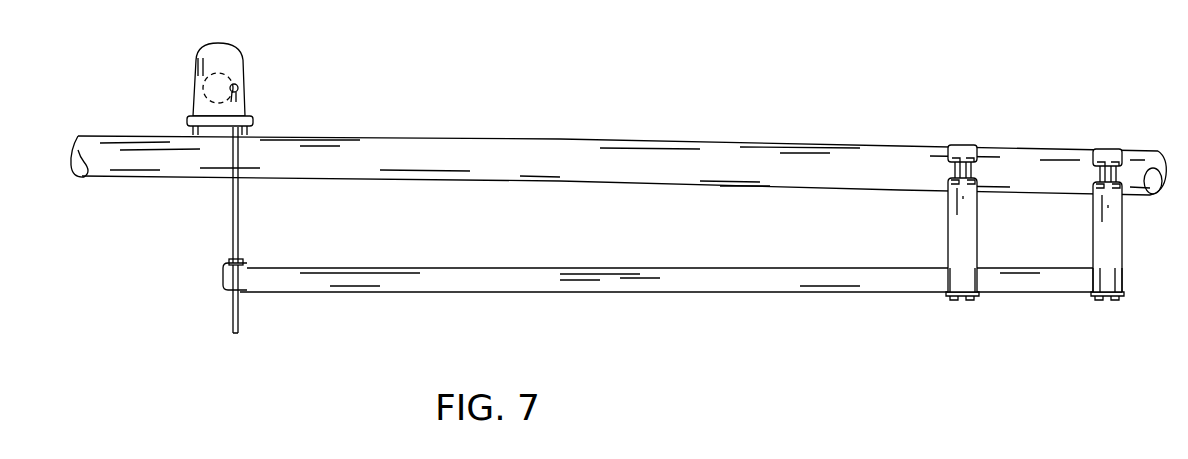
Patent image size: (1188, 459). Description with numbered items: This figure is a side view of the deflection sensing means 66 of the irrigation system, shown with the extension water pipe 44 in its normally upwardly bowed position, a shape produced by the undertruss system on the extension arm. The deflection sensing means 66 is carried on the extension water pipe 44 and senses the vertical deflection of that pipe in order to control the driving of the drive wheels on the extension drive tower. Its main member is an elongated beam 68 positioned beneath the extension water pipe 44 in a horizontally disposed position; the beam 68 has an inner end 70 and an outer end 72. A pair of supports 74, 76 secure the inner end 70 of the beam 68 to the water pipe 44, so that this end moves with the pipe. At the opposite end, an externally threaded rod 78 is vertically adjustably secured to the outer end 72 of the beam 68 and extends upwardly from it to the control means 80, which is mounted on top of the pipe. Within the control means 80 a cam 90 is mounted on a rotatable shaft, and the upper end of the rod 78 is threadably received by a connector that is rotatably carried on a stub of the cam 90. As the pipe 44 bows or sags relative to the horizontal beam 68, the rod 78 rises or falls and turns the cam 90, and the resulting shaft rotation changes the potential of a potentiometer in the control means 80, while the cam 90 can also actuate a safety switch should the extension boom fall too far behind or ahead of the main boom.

The extension water pipe 44 is at (687, 163).
The deflection sensing means 66 is at (757, 299).
The elongated beam 68 is at (592, 280).
The inner end 70 is at (1123, 283).
The outer end 72 is at (222, 270).
The support 74 is at (1102, 235).
The support 76 is at (958, 217).
The externally threaded rod 78 is at (239, 198).
The control means 80 is at (265, 90).
The cam 90 is at (192, 73).